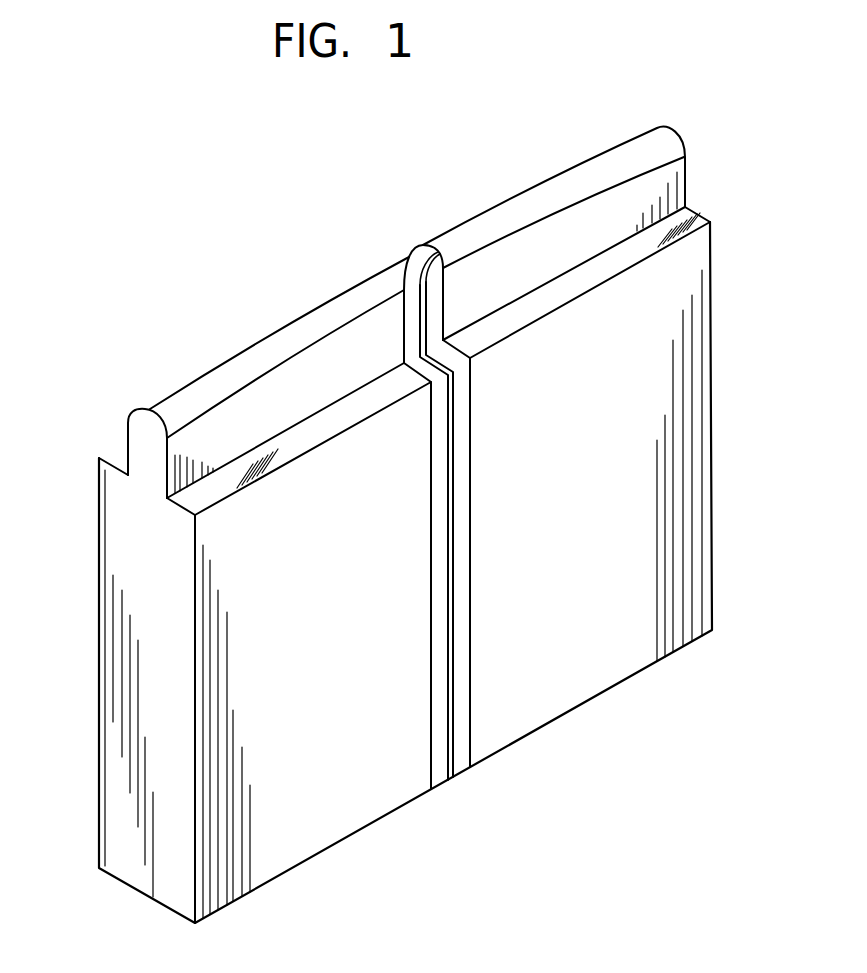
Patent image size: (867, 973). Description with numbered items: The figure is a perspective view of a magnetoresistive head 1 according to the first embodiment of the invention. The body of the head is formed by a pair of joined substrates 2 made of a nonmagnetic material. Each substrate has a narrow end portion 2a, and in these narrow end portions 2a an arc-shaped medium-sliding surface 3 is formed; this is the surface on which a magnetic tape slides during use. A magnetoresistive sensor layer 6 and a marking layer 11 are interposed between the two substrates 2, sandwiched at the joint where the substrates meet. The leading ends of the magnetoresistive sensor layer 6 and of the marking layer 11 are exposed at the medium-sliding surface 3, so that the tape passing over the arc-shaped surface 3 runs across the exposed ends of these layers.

The magnetoresistive head 1 is at (143, 292).
The substrates 2 is at (122, 806).
The narrow end portions 2a is at (223, 420).
The medium-sliding surface 3 is at (243, 350).
The magnetoresistive sensor layer 6 is at (387, 264).
The marking layer 11 is at (400, 253).